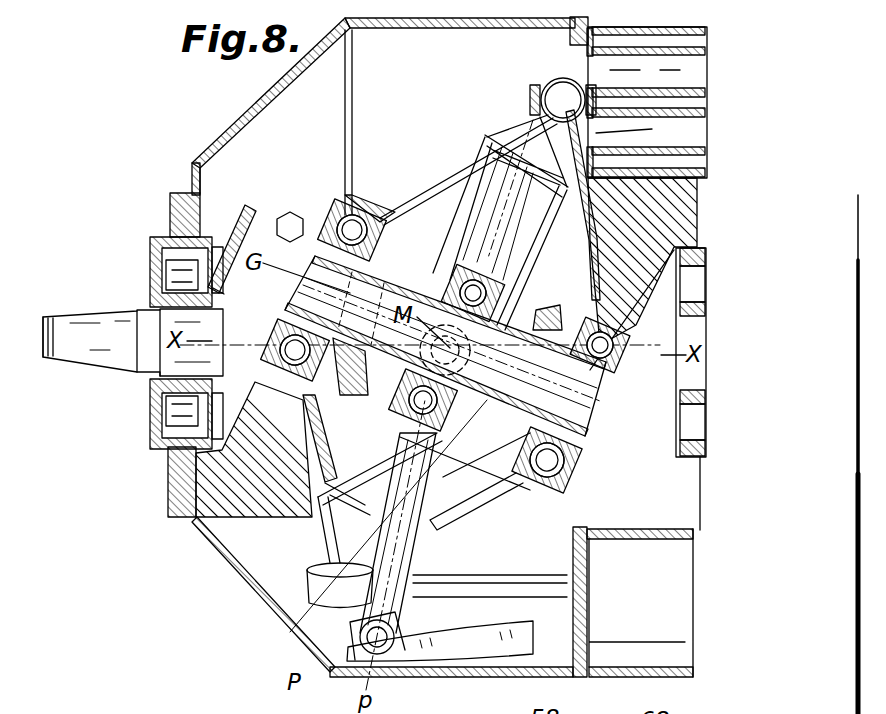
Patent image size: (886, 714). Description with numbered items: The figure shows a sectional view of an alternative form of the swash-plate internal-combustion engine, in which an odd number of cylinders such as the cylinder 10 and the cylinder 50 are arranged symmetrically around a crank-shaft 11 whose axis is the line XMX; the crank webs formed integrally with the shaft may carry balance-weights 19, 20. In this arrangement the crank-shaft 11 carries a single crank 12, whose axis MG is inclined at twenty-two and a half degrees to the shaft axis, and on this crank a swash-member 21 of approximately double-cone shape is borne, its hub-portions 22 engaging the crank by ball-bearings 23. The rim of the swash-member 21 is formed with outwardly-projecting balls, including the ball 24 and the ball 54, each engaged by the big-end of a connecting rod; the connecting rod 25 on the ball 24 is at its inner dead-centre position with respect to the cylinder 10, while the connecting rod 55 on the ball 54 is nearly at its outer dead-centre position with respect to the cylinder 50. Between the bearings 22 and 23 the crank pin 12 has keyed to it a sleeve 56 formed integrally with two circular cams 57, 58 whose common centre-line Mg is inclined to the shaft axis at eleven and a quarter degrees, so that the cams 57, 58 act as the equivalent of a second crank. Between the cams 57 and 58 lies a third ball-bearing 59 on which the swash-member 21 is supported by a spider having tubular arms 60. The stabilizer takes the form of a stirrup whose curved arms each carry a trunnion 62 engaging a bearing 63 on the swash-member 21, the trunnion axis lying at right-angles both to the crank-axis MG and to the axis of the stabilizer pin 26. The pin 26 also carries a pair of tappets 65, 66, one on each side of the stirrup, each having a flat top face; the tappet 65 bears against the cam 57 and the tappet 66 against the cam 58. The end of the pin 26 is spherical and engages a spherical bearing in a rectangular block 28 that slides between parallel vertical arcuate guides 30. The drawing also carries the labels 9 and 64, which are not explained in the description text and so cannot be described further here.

The crank pin bearing 9 is at (480, 269).
The cylinder 10 is at (669, 150).
The crank-shaft 11 is at (203, 347).
The crank 12 is at (299, 196).
The balance-weight 19 is at (217, 507).
The balance-weight 20 is at (640, 290).
The swash-member 21 is at (457, 167).
The hub-portion 22 is at (347, 222).
The ball-bearing 23 is at (604, 350).
The ball 24 is at (563, 103).
The connecting rod 25 is at (625, 125).
The stabilizer pin 26 is at (400, 553).
The rectangular block 28 is at (403, 634).
The arcuate guides 30 is at (477, 634).
The cylinder 50 is at (646, 557).
The ball 54 is at (325, 552).
The connecting rod 55 is at (522, 582).
The sleeve 56 is at (410, 290).
The circular cam 57 is at (336, 426).
The circular cam 58 is at (577, 307).
The third ball-bearing 59 is at (490, 292).
The tubular arm 60 is at (500, 222).
The trunnion 62 is at (420, 400).
The bearing 63 is at (482, 292).
The lever 64 is at (467, 483).
The tappet 65 is at (380, 469).
The tappet 66 is at (457, 463).